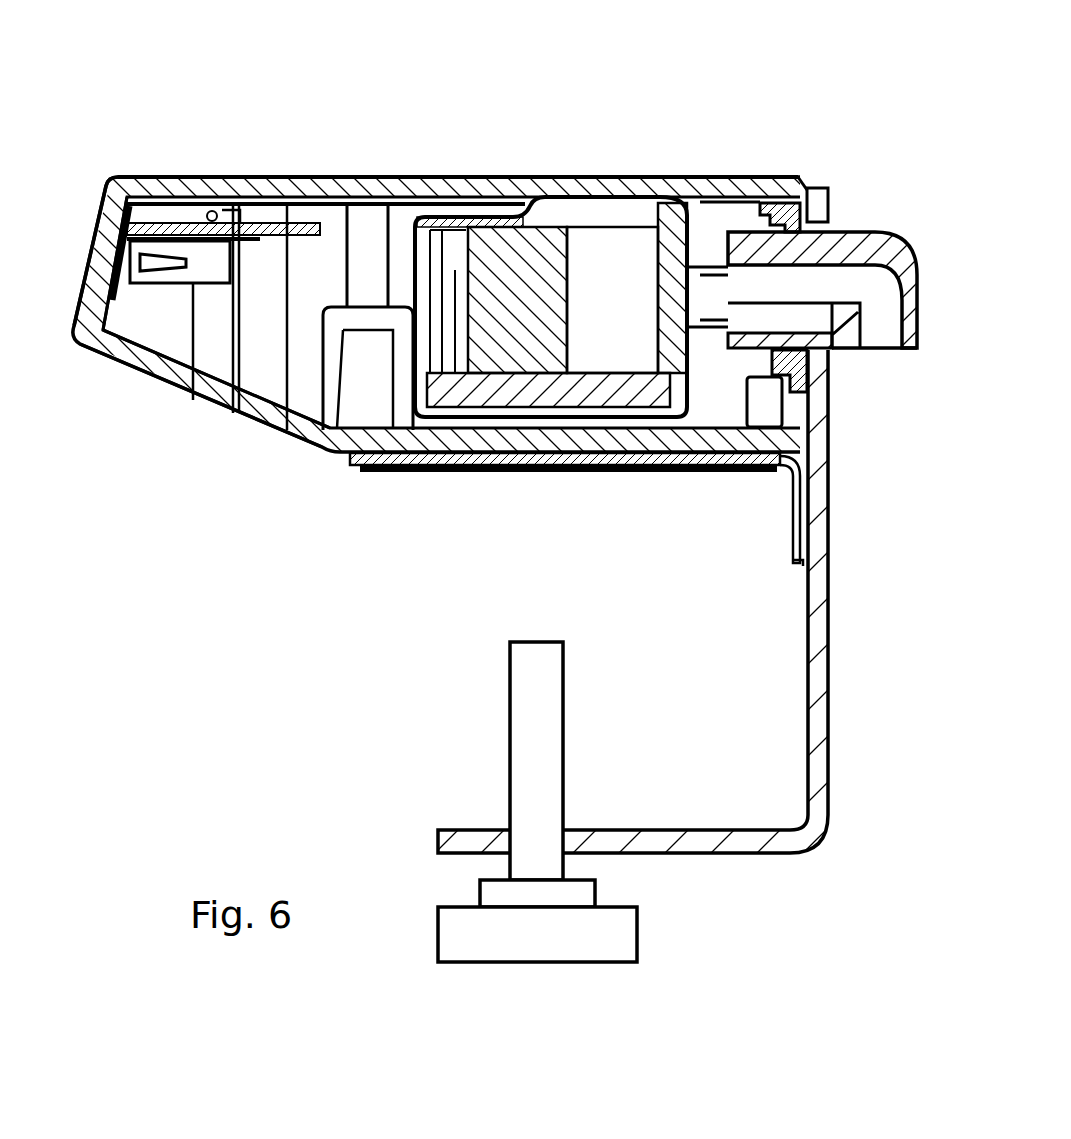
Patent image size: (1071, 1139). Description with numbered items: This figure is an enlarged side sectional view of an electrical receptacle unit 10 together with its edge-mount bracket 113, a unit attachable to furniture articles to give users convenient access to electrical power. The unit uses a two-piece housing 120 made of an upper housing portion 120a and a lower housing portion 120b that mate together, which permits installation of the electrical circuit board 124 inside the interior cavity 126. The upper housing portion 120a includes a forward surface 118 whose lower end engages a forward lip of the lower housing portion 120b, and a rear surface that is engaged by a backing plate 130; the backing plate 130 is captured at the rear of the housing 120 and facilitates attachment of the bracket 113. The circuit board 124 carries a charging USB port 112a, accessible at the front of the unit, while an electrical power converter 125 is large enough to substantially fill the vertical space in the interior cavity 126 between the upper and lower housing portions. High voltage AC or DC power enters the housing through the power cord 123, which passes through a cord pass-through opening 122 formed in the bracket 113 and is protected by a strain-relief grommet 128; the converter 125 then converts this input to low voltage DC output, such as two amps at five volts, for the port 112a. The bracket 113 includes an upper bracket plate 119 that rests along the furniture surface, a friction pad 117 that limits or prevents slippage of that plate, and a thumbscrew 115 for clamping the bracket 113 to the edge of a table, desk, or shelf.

The electrical receptacle unit 10 is at (731, 92).
The two-piece housing 120 is at (422, 176).
The upper housing portion 120a is at (458, 115).
The lower housing portion 120b is at (208, 402).
The forward surface 118 is at (95, 252).
The electrical circuit board 124 is at (158, 225).
The charging USB port 112a is at (157, 290).
The interior cavity 126 is at (308, 280).
The electrical power converter 125 is at (548, 250).
The backing plate 130 is at (788, 203).
The cord pass-through opening 122 is at (836, 216).
The power cord 123 is at (906, 242).
The strain-relief grommet 128 is at (858, 283).
The upper bracket plate 119 is at (347, 457).
The friction pad 117 is at (493, 473).
The thumbscrew 115 is at (553, 732).
The edge-mount bracket 113 is at (828, 697).